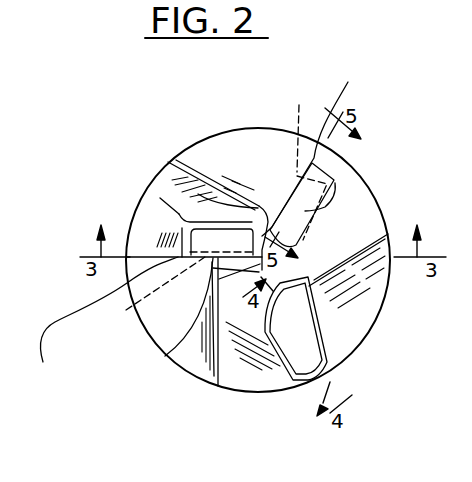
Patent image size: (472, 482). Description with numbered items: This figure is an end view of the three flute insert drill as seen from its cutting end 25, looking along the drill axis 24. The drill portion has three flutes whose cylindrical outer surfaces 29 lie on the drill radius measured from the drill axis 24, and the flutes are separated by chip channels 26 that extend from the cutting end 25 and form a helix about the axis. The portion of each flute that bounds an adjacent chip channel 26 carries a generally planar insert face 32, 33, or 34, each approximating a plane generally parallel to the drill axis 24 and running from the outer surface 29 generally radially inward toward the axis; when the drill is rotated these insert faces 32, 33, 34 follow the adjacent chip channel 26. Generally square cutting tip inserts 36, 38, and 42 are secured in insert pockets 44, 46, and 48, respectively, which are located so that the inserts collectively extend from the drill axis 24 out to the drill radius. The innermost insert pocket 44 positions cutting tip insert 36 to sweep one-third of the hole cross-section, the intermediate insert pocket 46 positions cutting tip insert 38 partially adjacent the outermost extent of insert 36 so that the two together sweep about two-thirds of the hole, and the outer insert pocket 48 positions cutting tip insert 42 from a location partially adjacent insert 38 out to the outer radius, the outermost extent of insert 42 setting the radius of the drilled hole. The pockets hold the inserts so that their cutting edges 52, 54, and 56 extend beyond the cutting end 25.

The drill axis 24 is at (314, 475).
The cutting end 25 is at (348, 227).
The chip channels 26 is at (237, 155).
The cylindrical outer surfaces 29 is at (140, 197).
The insert face 32 is at (127, 283).
The insert face 33 is at (318, 148).
The insert face 34 is at (282, 303).
The cutting tip insert 36 is at (176, 292).
The cutting tip insert 38 is at (293, 190).
The cutting tip insert 42 is at (285, 340).
The innermost insert pocket 44 is at (107, 325).
The intermediate insert pocket 46 is at (337, 181).
The outer insert pocket 48 is at (297, 386).
The cutting edge 52 is at (163, 358).
The cutting edge 54 is at (308, 160).
The cutting edge 56 is at (327, 368).